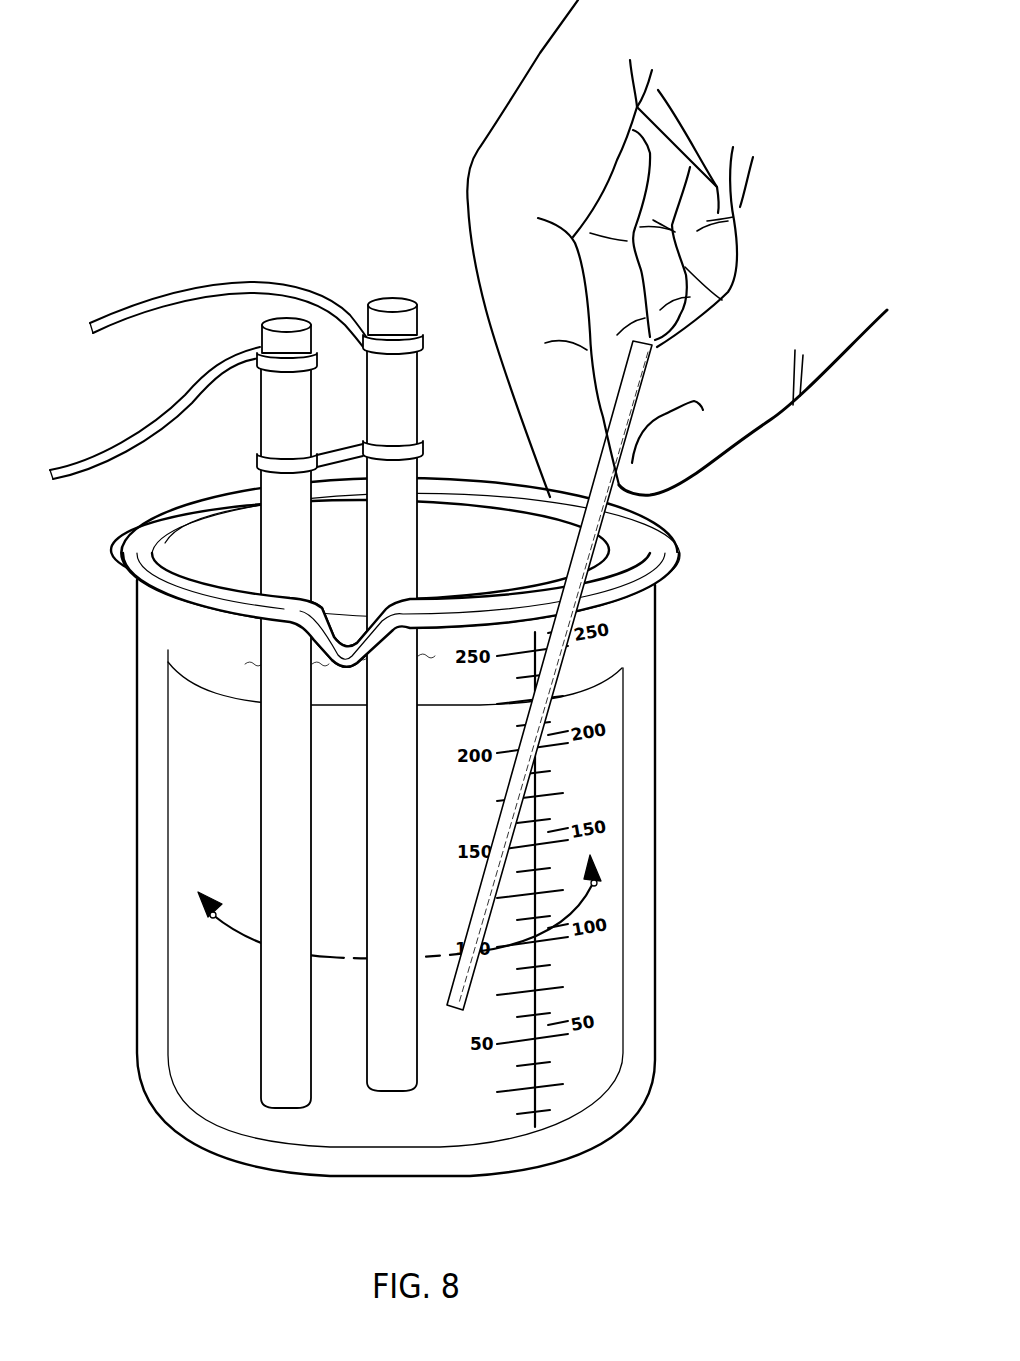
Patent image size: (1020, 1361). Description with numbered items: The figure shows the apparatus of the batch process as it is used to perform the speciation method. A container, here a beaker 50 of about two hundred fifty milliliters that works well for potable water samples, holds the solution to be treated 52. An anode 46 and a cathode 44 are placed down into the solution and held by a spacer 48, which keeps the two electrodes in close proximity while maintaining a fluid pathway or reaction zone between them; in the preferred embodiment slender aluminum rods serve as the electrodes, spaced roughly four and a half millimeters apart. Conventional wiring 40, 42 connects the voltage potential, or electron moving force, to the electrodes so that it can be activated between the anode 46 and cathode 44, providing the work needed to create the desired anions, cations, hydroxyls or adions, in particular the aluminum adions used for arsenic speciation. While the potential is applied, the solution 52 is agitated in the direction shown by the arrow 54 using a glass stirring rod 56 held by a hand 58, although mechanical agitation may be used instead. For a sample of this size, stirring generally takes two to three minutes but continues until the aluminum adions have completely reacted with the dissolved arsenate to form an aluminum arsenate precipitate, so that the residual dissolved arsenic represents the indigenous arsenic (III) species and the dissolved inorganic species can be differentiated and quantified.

The conventional wiring 40 is at (193, 290).
The conventional wiring 42 is at (125, 440).
The cathode 44 is at (278, 420).
The anode 46 is at (403, 395).
The spacer 48 is at (342, 457).
The beaker 50 is at (130, 565).
The solution to be treated 52 is at (200, 700).
The arrow 54 is at (247, 937).
The glass stirring rod 56 is at (640, 530).
The hand 58 is at (817, 342).